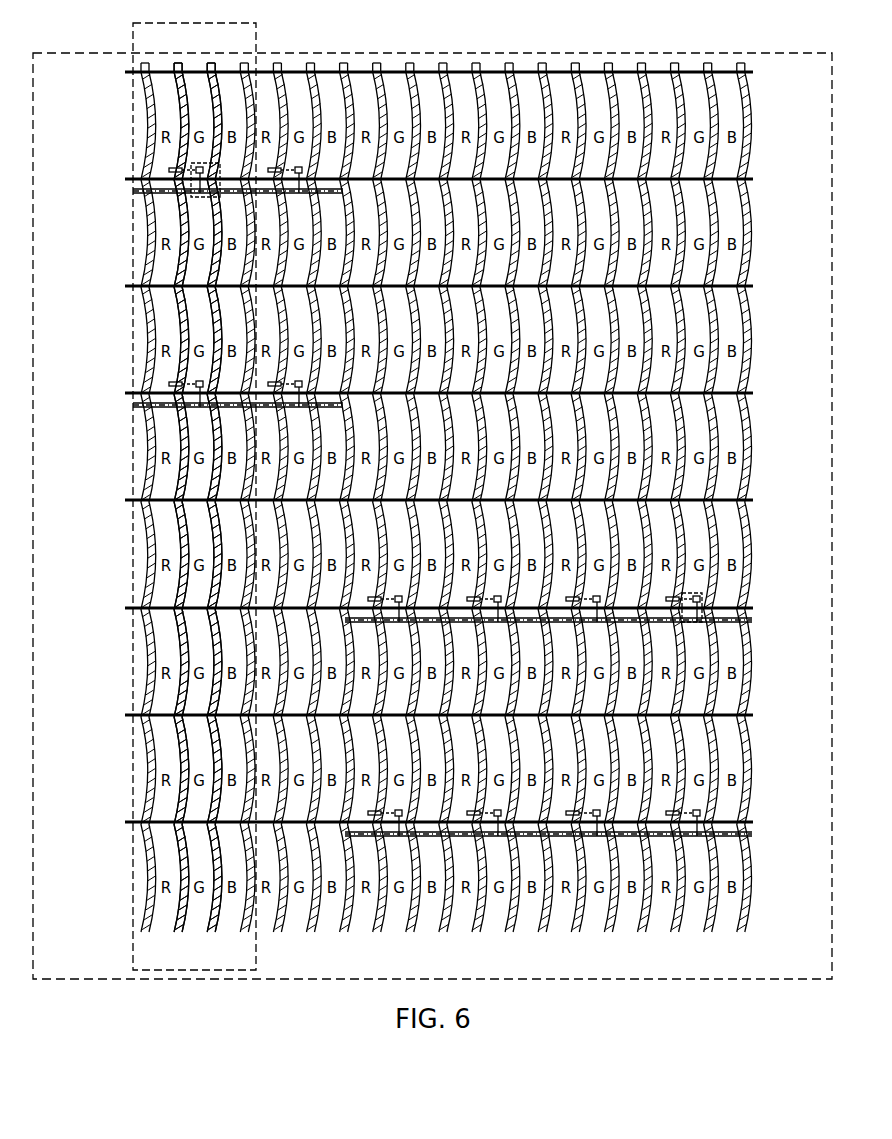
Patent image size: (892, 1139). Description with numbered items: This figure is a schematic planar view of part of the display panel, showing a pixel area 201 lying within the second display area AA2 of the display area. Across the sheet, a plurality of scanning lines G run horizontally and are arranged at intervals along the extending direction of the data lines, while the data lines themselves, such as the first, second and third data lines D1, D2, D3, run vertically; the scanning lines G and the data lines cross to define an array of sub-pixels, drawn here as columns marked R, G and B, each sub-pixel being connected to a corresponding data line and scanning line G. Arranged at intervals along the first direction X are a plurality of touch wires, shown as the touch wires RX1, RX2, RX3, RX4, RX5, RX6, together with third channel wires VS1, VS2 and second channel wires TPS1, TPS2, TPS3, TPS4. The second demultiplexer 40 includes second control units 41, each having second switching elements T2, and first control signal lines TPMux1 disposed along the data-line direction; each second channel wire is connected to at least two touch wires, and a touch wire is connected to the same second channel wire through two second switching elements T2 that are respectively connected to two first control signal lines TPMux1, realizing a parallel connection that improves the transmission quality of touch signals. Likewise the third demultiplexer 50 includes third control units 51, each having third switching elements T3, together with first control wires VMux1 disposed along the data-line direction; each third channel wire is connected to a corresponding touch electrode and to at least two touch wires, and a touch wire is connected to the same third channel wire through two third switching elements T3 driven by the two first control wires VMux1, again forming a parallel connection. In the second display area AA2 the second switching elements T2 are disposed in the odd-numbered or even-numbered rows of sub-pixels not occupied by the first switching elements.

The pixel area 201 is at (130, 137).
The second display area AA2 is at (354, 50).
The first direction X is at (786, 35).
The scanning line G is at (126, 179).
The first data line D1 is at (145, 63).
The second data line D2 is at (179, 63).
The third data line D3 is at (212, 63).
The first touch wire RX1 is at (178, 922).
The first third channel wire VS1 is at (211, 922).
The second touch wire RX2 is at (277, 922).
The second third channel wire VS2 is at (310, 922).
The third touch wire RX3 is at (376, 922).
The first second channel wire TPS1 is at (409, 922).
The fourth touch wire RX4 is at (476, 922).
The second second channel wire TPS2 is at (509, 922).
The fifth touch wire RX5 is at (575, 922).
The third second channel wire TPS3 is at (608, 922).
The sixth touch wire RX6 is at (674, 922).
The fourth second channel wire TPS4 is at (707, 922).
The third demultiplexer 50 is at (194, 296).
The first control wire VMux1 is at (132, 191).
The third switching element T3 is at (147, 214).
The third control unit 51 is at (199, 203).
The second demultiplexer 40 is at (587, 705).
The first control signal line TPMux1 is at (752, 618).
The second switching element T2 is at (739, 589).
The second control unit 41 is at (705, 595).